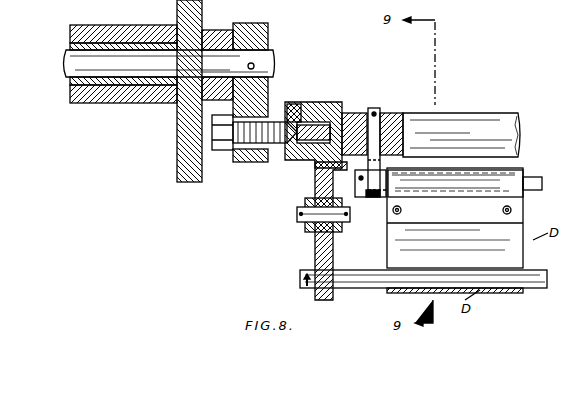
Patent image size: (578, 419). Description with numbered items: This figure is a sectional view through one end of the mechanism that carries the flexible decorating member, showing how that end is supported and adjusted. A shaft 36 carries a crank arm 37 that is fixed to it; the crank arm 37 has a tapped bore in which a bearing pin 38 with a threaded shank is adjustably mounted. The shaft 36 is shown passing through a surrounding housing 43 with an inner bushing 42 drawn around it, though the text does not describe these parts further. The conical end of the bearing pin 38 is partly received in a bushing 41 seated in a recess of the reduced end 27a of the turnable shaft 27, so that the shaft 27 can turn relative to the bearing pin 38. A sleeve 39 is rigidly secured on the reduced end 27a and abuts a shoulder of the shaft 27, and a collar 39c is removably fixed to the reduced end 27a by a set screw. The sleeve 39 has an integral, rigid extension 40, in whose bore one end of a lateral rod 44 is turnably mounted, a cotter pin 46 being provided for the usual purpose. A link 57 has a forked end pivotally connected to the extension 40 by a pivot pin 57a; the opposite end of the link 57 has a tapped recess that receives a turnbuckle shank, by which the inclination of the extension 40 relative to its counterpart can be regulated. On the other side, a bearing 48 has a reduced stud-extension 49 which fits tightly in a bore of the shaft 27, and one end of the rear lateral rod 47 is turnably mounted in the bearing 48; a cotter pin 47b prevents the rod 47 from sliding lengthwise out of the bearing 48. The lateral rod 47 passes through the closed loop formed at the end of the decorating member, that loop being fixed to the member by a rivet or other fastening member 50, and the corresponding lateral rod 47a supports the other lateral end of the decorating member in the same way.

The turnable shaft 27 is at (490, 115).
The reduced end 27a is at (347, 112).
The shaft 36 is at (65, 55).
The crank arm 37 is at (268, 30).
The bearing pin 38 is at (274, 146).
The sleeve 39 is at (313, 110).
The collar 39c is at (300, 150).
The extension 40 is at (315, 180).
The bushing 41 is at (294, 106).
The bushing 42 is at (72, 80).
The housing 43 is at (99, 103).
The lateral rod 44 is at (535, 272).
The cotter pin 46 is at (306, 274).
The lateral rod 47 is at (540, 178).
The lateral rod 47a is at (515, 170).
The cotter pin 47b is at (360, 185).
The bearing 48 is at (380, 192).
The stud-extension 49 is at (378, 112).
The fastening member 50 is at (512, 210).
The link 57 is at (305, 203).
The pivot pin 57a is at (297, 216).